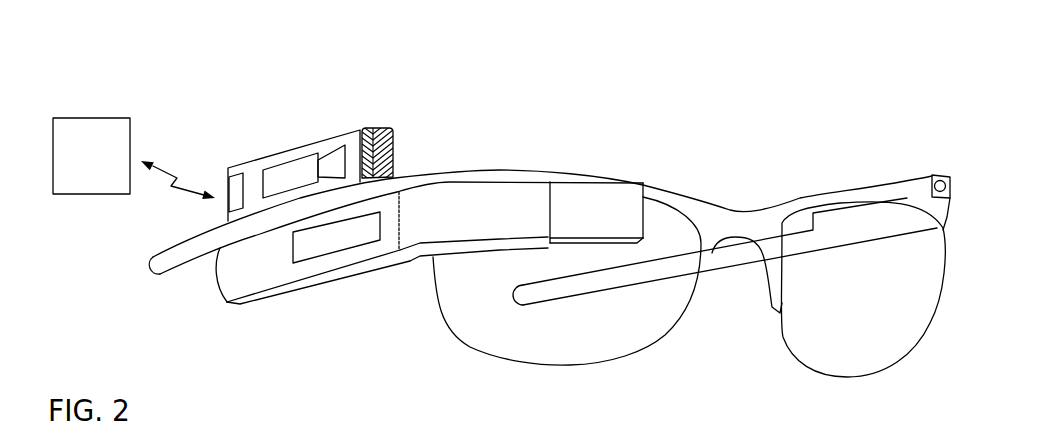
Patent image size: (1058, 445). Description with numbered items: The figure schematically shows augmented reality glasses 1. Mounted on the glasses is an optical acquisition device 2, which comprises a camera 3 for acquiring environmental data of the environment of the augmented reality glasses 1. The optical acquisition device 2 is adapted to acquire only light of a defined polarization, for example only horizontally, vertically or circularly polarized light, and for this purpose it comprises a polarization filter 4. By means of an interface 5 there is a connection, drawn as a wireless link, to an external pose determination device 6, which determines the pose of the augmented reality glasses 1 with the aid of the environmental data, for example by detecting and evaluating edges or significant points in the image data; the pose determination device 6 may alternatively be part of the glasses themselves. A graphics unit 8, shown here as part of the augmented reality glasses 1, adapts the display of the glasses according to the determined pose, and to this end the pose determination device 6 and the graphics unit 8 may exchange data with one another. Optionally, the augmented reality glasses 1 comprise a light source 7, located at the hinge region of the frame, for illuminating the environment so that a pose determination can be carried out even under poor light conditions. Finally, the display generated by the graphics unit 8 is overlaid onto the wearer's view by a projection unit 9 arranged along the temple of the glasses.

The augmented reality glasses 1 is at (549, 198).
The optical acquisition device 2 is at (311, 115).
The camera 3 is at (305, 157).
The polarization filter 4 is at (392, 145).
The interface 5 is at (228, 190).
The pose determination device 6 is at (92, 118).
The light source 7 is at (908, 182).
The graphics unit 8 is at (323, 253).
The projection unit 9 is at (595, 185).